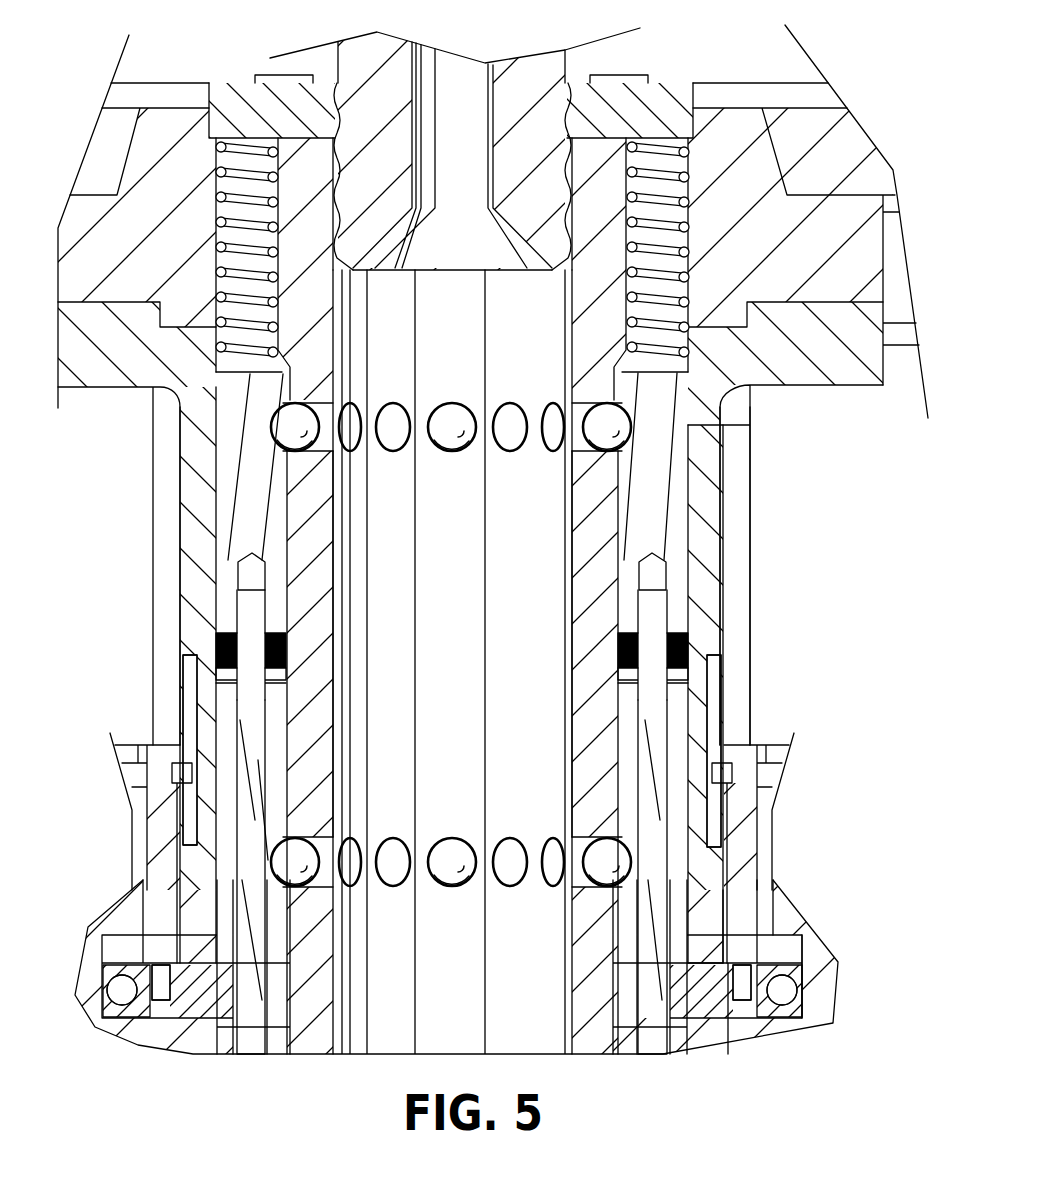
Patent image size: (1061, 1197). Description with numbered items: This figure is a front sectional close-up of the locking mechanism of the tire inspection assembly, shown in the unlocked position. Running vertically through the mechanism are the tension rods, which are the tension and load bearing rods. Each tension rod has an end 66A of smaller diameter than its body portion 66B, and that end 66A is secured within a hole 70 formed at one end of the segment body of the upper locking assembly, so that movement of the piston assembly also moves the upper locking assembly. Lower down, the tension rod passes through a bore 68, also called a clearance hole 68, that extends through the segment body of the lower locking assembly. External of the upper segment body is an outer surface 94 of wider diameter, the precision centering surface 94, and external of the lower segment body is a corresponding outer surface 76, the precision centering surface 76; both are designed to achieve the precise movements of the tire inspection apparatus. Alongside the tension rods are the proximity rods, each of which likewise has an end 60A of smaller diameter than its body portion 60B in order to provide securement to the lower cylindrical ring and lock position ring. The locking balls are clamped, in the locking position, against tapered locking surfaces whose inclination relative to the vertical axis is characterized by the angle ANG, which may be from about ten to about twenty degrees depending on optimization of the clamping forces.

The precision centering surface 94 is at (750, 425).
The angle ANG is at (622, 402).
The end of rod 66A is at (257, 610).
The bore 68 is at (263, 723).
The body portion of rod 66B is at (248, 920).
The hole 70 is at (670, 615).
The end of rod 60A is at (743, 753).
The precision centering surface 76 is at (687, 863).
The body portion of rod 60B is at (745, 913).